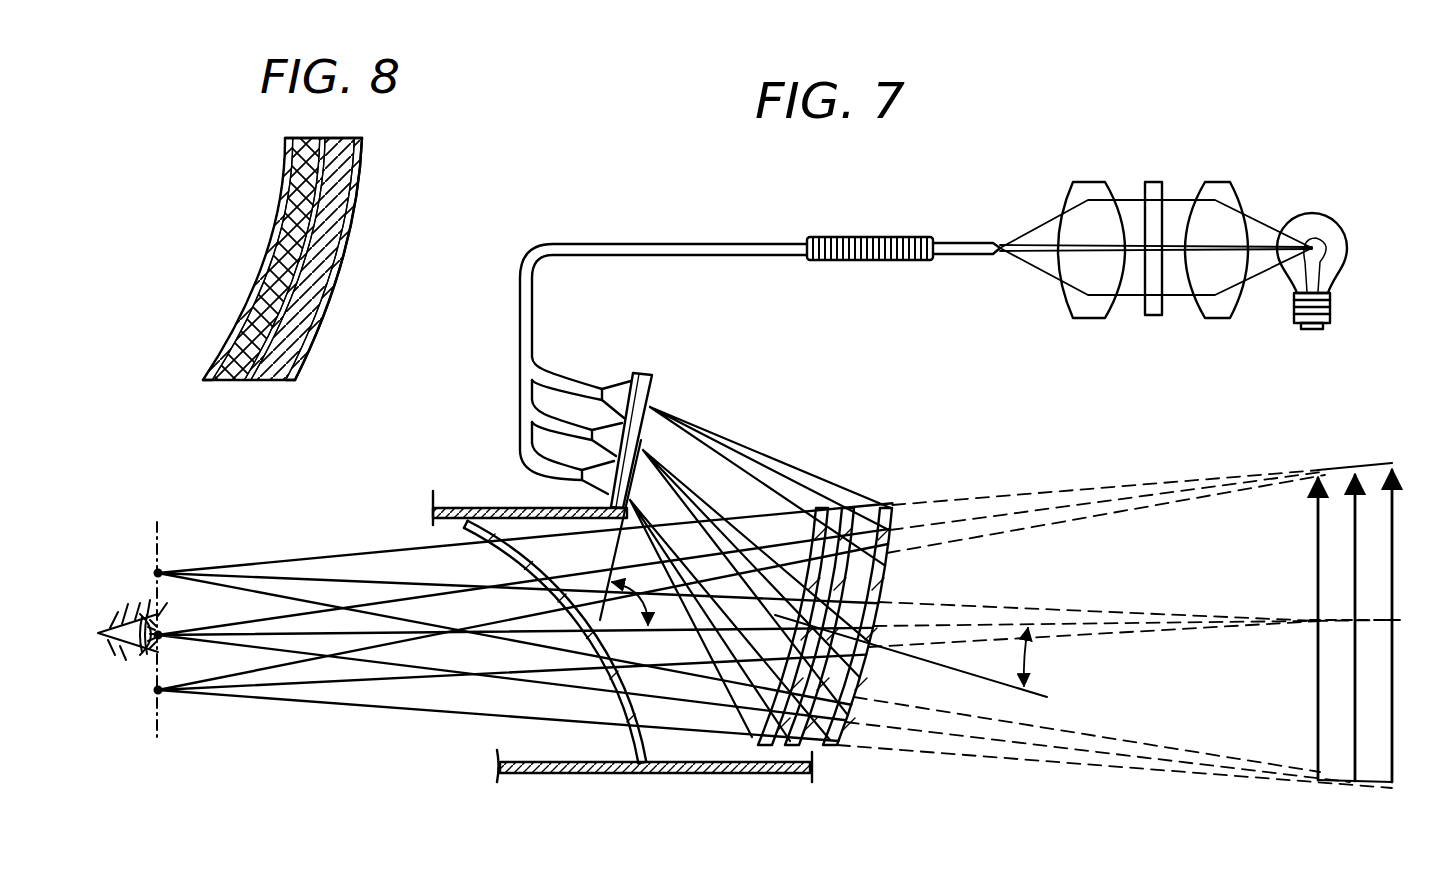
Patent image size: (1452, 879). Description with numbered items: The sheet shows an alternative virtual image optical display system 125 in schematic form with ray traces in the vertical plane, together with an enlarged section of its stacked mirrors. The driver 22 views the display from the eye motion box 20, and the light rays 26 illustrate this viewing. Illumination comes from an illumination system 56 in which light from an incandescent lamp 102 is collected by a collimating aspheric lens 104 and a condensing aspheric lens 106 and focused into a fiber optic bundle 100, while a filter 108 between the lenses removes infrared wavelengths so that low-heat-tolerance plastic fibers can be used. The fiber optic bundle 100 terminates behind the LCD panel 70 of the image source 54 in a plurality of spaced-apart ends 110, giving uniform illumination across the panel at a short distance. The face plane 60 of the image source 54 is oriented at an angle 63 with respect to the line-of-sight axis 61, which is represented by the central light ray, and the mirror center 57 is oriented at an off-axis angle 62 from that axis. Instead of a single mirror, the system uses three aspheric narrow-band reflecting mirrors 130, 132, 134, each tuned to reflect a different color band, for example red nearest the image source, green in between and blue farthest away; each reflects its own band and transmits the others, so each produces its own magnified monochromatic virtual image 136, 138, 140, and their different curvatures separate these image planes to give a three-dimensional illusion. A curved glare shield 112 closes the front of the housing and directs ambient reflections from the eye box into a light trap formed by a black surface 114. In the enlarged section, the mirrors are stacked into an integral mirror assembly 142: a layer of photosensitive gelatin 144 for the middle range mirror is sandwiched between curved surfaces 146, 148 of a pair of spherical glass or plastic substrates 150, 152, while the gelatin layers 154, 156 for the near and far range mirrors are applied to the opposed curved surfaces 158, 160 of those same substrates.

In FIG. 7, the eye motion box 20 is at (160, 528).
In FIG. 7, the driver 22 is at (128, 614).
In FIG. 7, the light rays 26 is at (290, 705).
In FIG. 7, the image source 54 is at (622, 371).
In FIG. 7, the illumination system 56 is at (1030, 298).
In FIG. 7, the center of the mirror 57 is at (865, 668).
In FIG. 7, the face plane of the image source 60 is at (608, 562).
In FIG. 7, the line-of-sight axis 61 is at (1037, 627).
In FIG. 7, the off-axis angle 62 is at (1030, 655).
In FIG. 7, the angle of the face plane 63 is at (646, 618).
In FIG. 7, the LCD panel 70 is at (638, 370).
In FIG. 7, the fiber optic bundle 100 is at (850, 237).
In FIG. 7, the lamp 102 is at (1314, 212).
In FIG. 7, the collimating aspheric lens 104 is at (1215, 182).
In FIG. 7, the condensing aspheric lens 106 is at (1085, 182).
In FIG. 7, the filter 108 is at (1152, 318).
In FIG. 7, the spaced-apart ends of the fiber optic bundle 110 is at (612, 496).
In FIG. 7, the glare shield 112 is at (633, 740).
In FIG. 7, the black surface 114 is at (530, 755).
In FIG. 7, the optical display system 125 is at (487, 453).
In FIG. 7, the near range reflecting mirror 130 is at (812, 520).
In FIG. 7, the middle range reflecting mirror 132 is at (858, 515).
In FIG. 7, the far range reflecting mirror 134 is at (893, 579).
In FIG. 7, the magnified virtual image 136 is at (1318, 572).
In FIG. 7, the magnified virtual image 138 is at (1355, 540).
In FIG. 7, the magnified virtual image 140 is at (1390, 510).
In FIG. 8, the integral mirror assembly 142 is at (185, 147).
In FIG. 8, the layer of photosensitive gelatin 144 is at (295, 270).
In FIG. 8, the curved surface of substrate 146 is at (270, 312).
In FIG. 8, the curved surface of substrate 148 is at (285, 345).
In FIG. 8, the substrate 150 is at (290, 160).
In FIG. 8, the substrate 152 is at (355, 172).
In FIG. 8, the layer of gelatin 154 is at (278, 205).
In FIG. 8, the layer of gelatin 156 is at (352, 225).
In FIG. 8, the curved surface of substrate 158 is at (210, 373).
In FIG. 8, the curved surface of substrate 160 is at (290, 378).